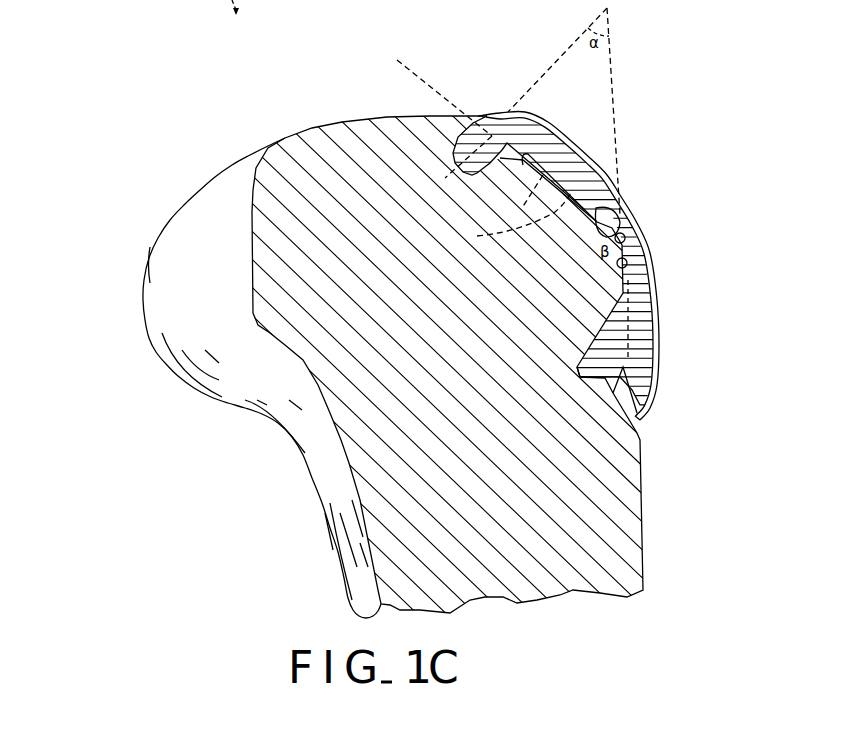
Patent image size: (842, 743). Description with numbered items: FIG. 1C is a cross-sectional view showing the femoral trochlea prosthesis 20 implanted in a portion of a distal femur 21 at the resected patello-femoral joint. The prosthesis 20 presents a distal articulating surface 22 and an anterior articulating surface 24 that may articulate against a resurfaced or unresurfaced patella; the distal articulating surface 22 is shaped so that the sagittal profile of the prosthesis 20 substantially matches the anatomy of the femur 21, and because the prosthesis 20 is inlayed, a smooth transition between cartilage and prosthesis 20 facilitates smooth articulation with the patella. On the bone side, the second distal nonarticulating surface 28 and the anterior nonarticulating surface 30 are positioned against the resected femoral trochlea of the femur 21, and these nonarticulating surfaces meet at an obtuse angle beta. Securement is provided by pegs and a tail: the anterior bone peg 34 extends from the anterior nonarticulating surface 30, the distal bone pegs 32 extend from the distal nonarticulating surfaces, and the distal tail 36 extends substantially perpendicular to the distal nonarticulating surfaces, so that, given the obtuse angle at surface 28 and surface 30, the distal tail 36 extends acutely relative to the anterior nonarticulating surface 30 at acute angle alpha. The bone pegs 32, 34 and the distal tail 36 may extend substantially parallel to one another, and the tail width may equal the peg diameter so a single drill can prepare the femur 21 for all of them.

The femoral trochlea prosthesis 20 is at (550, 238).
The femur 21 is at (118, 248).
The distal articulating surface 22 is at (529, 116).
The anterior articulating surface 24 is at (660, 317).
The second distal nonarticulating surface 28 is at (620, 210).
The anterior nonarticulating surface 30 is at (637, 267).
The distal bone pegs 32 is at (362, 126).
The anterior bone peg 34 is at (637, 427).
The distal tail 36 is at (412, 125).